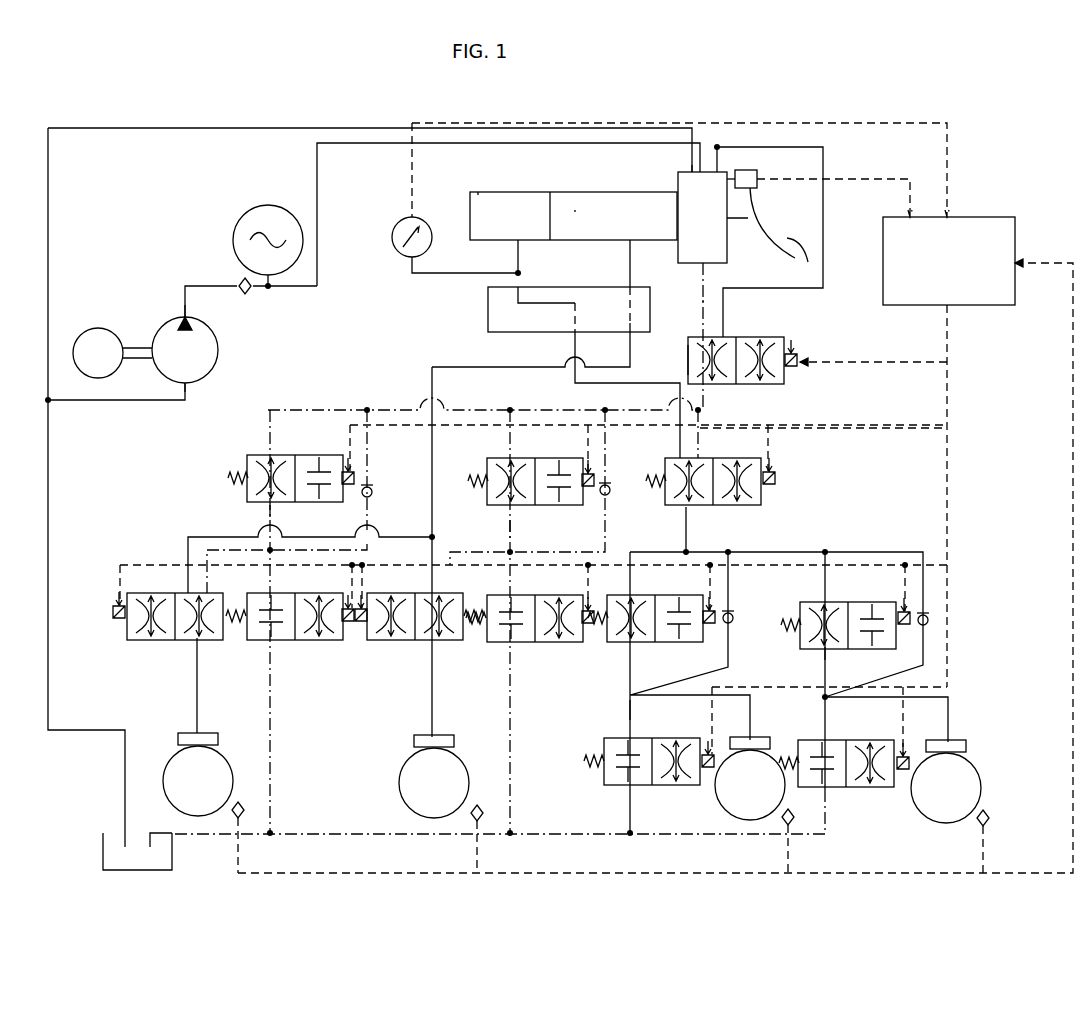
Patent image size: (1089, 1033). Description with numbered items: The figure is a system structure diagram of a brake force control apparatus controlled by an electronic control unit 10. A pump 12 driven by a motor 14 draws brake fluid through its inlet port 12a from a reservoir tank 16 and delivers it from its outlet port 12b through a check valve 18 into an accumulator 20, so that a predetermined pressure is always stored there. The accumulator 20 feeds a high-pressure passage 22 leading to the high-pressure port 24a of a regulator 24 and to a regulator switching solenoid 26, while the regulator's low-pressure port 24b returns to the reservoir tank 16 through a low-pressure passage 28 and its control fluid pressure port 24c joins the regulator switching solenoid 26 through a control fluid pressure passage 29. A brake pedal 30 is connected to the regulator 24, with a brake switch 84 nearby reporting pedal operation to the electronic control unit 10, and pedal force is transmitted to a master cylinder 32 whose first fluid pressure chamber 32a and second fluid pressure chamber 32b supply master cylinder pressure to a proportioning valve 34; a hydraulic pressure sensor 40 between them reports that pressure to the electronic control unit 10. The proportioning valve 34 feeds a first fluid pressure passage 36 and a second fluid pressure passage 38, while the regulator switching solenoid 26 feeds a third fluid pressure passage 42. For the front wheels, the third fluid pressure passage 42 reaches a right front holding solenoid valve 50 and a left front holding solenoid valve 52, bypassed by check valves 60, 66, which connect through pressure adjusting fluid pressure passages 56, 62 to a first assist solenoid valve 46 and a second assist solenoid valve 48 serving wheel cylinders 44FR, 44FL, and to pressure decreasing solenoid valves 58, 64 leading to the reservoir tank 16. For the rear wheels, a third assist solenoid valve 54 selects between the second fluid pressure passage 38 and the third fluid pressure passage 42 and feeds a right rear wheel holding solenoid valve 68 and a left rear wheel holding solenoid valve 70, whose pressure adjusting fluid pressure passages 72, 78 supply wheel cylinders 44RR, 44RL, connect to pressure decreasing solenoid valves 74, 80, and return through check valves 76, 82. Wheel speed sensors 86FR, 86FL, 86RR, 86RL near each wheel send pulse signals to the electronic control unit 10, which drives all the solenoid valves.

The electronic control unit 10 is at (1015, 232).
The pump 12 is at (218, 350).
The inlet port 12a is at (192, 388).
The outlet port 12b is at (190, 300).
The motor 14 is at (98, 328).
The reservoir tank 16 is at (172, 852).
The check valve 18 is at (252, 293).
The accumulator 20 is at (268, 205).
The high-pressure passage 22 is at (345, 143).
The regulator 24 is at (678, 188).
The high-pressure port 24a is at (727, 168).
The low-pressure port 24b is at (692, 168).
The control fluid pressure port 24c is at (690, 268).
The regulator switching solenoid 26 is at (730, 337).
The low-pressure passage 28 is at (248, 128).
The control fluid pressure passage 29 is at (700, 302).
The brake pedal 30 is at (760, 236).
The master cylinder 32 is at (548, 192).
The first fluid pressure chamber 32a is at (580, 205).
The second fluid pressure chamber 32b is at (478, 192).
The proportioning valve 34 is at (488, 325).
The first fluid pressure passage 36 is at (688, 360).
The second fluid pressure passage 38 is at (575, 352).
The hydraulic pressure sensor 40 is at (392, 240).
The third fluid pressure passage 42 is at (705, 400).
The wheel cylinder 44FR is at (210, 733).
The wheel cylinder 44FL is at (452, 735).
The wheel cylinder 44RR is at (766, 737).
The wheel cylinder 44RL is at (964, 740).
The first assist solenoid valve 46 is at (140, 640).
The second assist solenoid valve 48 is at (400, 640).
The right front holding solenoid valve 50 is at (247, 458).
The left front holding solenoid valve 52 is at (487, 462).
The third assist solenoid valve 54 is at (750, 505).
The pressure adjusting fluid pressure passage 56 is at (268, 515).
The right front wheel pressure decreasing solenoid valve 58 is at (285, 640).
The check valve 60 is at (372, 498).
The pressure adjusting fluid pressure passage 62 is at (515, 533).
The left front wheel pressure decreasing solenoid valve 64 is at (525, 642).
The check valve 66 is at (610, 497).
The right rear wheel holding solenoid valve 68 is at (612, 642).
The left rear wheel holding solenoid valve 70 is at (800, 606).
The pressure adjusting fluid pressure passage 72 is at (628, 718).
The right rear wheel pressure decreasing solenoid valve 74 is at (615, 787).
The check valve 76 is at (733, 624).
The pressure adjusting fluid pressure passage 78 is at (822, 668).
The left rear wheel pressure decreasing solenoid valve 80 is at (835, 790).
The check valve 82 is at (929, 622).
The brake switch 84 is at (750, 190).
The wheel speed sensor 86FR is at (243, 805).
The wheel speed sensor 86FL is at (470, 818).
The wheel speed sensor 86RR is at (782, 825).
The wheel speed sensor 86RL is at (978, 826).